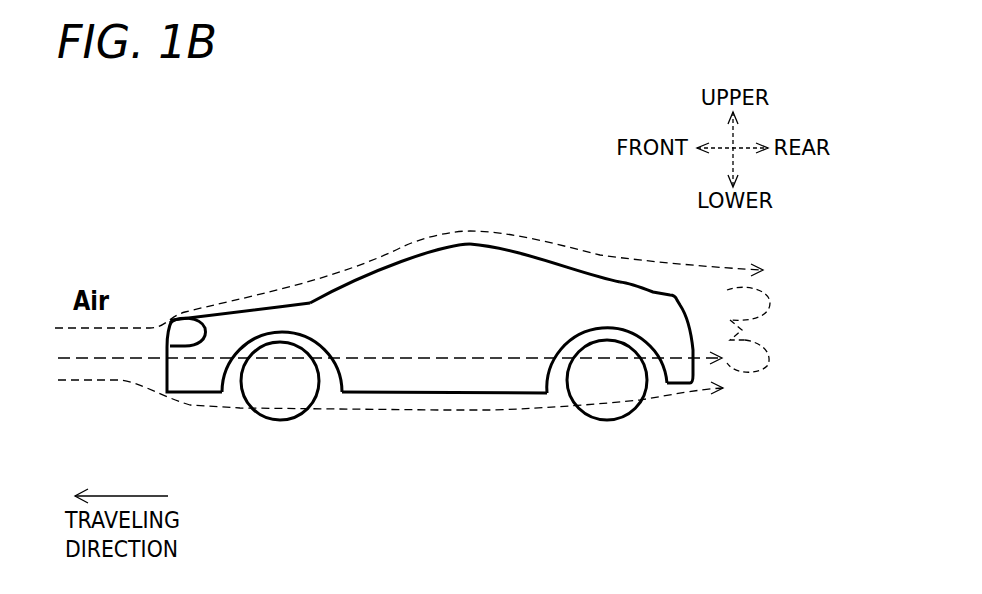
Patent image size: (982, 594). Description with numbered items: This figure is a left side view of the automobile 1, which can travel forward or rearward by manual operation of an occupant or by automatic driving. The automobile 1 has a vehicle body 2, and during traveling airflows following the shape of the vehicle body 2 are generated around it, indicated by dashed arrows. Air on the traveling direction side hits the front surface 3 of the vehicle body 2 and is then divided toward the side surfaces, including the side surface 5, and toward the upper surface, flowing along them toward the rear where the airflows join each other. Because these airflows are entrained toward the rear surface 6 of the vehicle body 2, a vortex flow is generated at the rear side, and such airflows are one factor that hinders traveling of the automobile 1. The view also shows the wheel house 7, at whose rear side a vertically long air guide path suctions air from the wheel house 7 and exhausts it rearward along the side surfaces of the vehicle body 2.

The automobile 1 is at (558, 213).
The vehicle body 2 is at (460, 243).
The front surface 3 is at (168, 345).
The side surface 5 is at (513, 367).
The rear surface 6 is at (690, 313).
The wheel house 7 is at (240, 373).